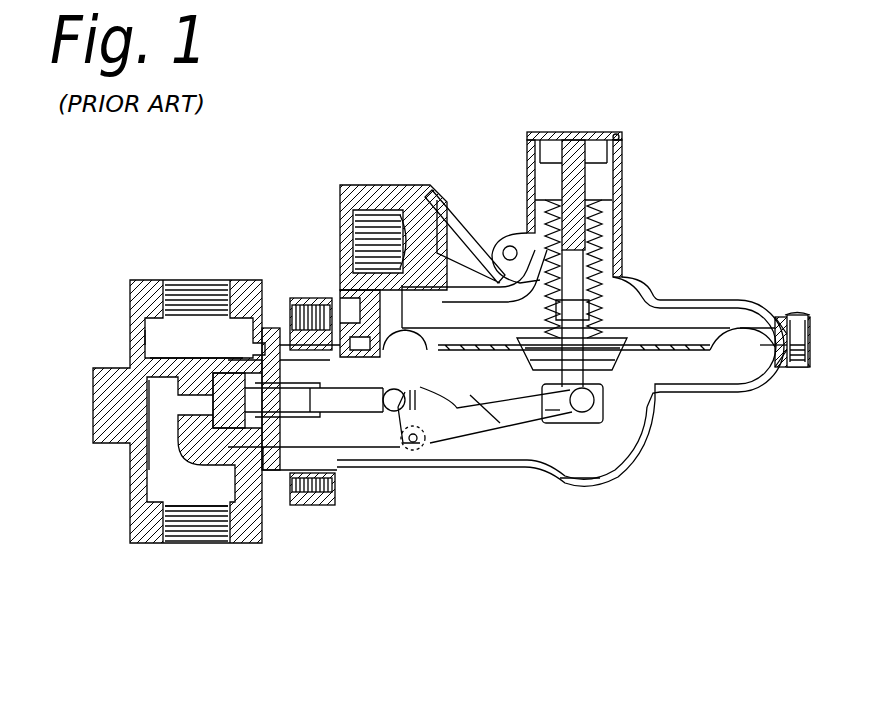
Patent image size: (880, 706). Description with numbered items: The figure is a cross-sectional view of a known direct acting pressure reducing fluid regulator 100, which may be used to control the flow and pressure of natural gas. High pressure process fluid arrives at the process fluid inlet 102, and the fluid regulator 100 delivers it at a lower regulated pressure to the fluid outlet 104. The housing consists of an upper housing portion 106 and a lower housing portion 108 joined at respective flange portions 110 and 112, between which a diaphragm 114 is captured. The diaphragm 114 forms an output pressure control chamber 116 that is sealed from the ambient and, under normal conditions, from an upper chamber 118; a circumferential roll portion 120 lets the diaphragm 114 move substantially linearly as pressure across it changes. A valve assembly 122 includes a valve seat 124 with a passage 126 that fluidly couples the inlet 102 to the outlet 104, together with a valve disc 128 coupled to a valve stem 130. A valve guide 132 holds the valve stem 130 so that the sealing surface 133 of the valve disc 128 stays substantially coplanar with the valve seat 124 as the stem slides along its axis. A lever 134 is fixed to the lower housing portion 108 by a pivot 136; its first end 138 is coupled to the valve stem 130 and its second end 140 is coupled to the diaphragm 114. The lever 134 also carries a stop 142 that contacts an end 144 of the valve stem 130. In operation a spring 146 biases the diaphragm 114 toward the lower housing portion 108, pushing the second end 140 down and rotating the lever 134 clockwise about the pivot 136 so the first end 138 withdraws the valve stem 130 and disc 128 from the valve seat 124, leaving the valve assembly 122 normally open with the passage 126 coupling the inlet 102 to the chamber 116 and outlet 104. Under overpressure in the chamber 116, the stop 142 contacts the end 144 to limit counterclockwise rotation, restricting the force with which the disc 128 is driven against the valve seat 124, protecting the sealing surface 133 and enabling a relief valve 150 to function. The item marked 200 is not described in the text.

The direct acting pressure reducing fluid regulator 100 is at (645, 122).
The process fluid inlet 102 is at (173, 520).
The fluid outlet 104 is at (290, 367).
The upper housing portion 106 is at (708, 298).
The lower housing portion 108 is at (700, 395).
The flange portion 110 is at (812, 330).
The flange portion 112 is at (795, 365).
The diaphragm 114 is at (705, 350).
The output pressure control chamber 116 is at (570, 447).
The upper chamber 118 is at (483, 317).
The circumferential roll portion 120 is at (785, 314).
The valve assembly 122 is at (287, 427).
The valve seat 124 is at (213, 387).
The passage 126 is at (190, 397).
The valve disc 128 is at (228, 422).
The valve stem 130 is at (345, 400).
The valve guide 132 is at (280, 330).
The sealing surface 133 is at (202, 358).
The lever 134 is at (572, 448).
The pivot 136 is at (423, 380).
The first end 138 is at (394, 405).
The second end 140 is at (593, 427).
The stop 142 is at (425, 400).
The end 144 is at (500, 423).
The spring 146 is at (598, 252).
The relief valve 150 is at (615, 313).
The sheet reference 200 is at (805, 705).